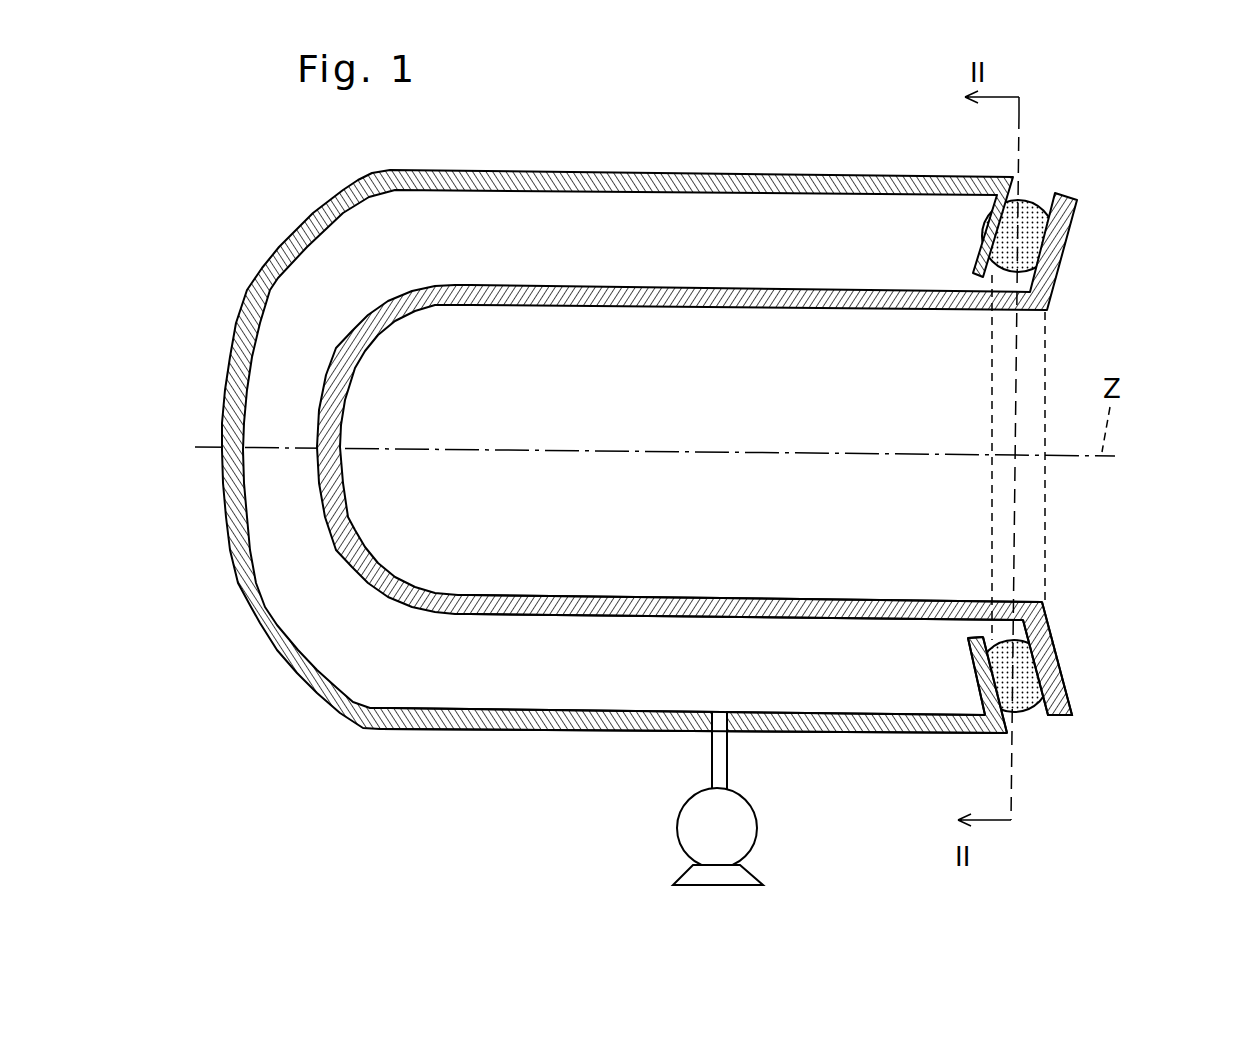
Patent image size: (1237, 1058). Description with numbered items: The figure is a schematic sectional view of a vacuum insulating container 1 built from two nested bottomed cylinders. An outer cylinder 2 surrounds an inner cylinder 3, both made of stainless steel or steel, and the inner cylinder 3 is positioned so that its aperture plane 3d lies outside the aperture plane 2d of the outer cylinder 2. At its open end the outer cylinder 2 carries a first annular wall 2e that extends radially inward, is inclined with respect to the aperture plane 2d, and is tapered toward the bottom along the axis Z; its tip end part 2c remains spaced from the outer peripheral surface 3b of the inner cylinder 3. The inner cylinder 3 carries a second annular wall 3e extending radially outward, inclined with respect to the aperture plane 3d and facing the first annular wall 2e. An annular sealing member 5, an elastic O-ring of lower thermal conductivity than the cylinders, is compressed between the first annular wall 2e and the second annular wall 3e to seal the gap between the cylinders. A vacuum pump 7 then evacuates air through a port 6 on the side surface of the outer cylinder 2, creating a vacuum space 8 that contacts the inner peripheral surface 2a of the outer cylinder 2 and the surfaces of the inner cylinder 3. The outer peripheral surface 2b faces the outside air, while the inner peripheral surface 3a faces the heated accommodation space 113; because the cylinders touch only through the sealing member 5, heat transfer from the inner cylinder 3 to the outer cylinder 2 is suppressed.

The vacuum insulating container 1 is at (667, 115).
The outer cylinder 2 is at (563, 730).
The inner peripheral surface of the outer cylinder 2a is at (530, 708).
The outer peripheral surface of the outer cylinder 2b is at (527, 731).
The tip end part 2c is at (973, 635).
The aperture plane of the outer cylinder 2d is at (992, 492).
The first annular wall 2e is at (980, 662).
The inner cylinder 3 is at (655, 598).
The inner peripheral surface of the inner cylinder 3a is at (603, 596).
The outer peripheral surface of the inner cylinder 3b is at (603, 617).
The aperture plane of the inner cylinder 3d is at (1043, 559).
The second annular wall 3e is at (1057, 662).
The sealing member 5 is at (1027, 683).
The port 6 is at (718, 767).
The vacuum pump 7 is at (685, 850).
The vacuum space 8 is at (730, 643).
The accommodation space 113 is at (940, 372).